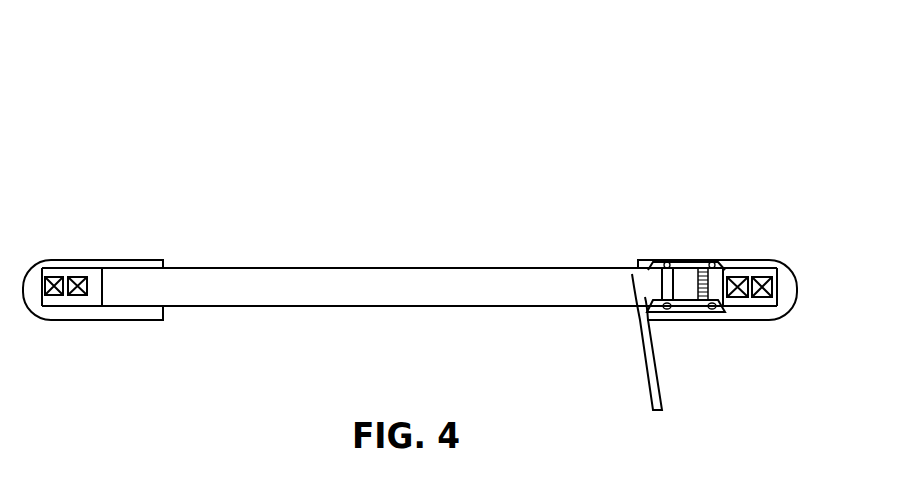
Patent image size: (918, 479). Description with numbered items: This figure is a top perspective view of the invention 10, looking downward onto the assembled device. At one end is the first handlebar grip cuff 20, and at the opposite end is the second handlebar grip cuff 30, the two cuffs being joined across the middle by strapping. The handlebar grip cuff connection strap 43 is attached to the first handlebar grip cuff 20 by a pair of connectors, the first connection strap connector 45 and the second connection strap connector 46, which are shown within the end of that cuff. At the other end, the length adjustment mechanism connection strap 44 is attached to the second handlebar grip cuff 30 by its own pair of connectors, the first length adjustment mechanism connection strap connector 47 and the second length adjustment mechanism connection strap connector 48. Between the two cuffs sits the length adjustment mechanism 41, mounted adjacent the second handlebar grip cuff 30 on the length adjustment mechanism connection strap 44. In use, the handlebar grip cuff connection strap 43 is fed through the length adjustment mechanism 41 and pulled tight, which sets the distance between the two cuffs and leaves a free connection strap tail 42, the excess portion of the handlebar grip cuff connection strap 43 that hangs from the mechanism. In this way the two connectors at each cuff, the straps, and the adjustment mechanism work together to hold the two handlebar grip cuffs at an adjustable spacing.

The invention 10 is at (474, 144).
The first handlebar grip cuff 20 is at (75, 258).
The second handlebar grip cuff 30 is at (752, 260).
The length adjustment mechanism 41 is at (680, 258).
The connection strap tail 42 is at (658, 382).
The handlebar grip cuff connection strap 43 is at (270, 268).
The length adjustment mechanism connection strap 44 is at (743, 308).
The first connection strap connector 45 is at (53, 278).
The second connection strap connector 46 is at (92, 283).
The first length adjustment mechanism connection strap connector 47 is at (738, 260).
The second length adjustment mechanism connection strap connector 48 is at (767, 260).